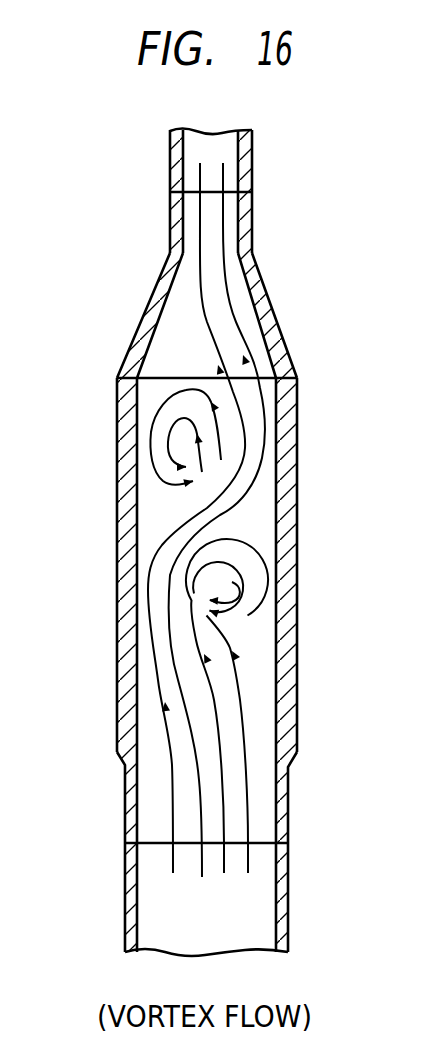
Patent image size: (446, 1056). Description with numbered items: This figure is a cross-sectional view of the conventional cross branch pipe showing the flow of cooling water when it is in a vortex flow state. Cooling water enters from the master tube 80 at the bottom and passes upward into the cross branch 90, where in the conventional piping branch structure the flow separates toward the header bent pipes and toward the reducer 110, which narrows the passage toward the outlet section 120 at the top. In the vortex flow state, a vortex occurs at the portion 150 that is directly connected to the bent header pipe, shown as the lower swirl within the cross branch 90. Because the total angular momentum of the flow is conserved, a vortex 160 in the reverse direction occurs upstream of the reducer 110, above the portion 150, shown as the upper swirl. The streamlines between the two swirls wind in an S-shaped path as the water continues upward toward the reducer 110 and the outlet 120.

The master tube 80 is at (277, 912).
The cross branch 90 is at (285, 472).
The reducer 110 is at (265, 312).
The outlet tube section 120 is at (250, 168).
The portion directly connected to the bent header pipe 150 is at (232, 582).
The vortex in the reverse direction 160 is at (180, 445).